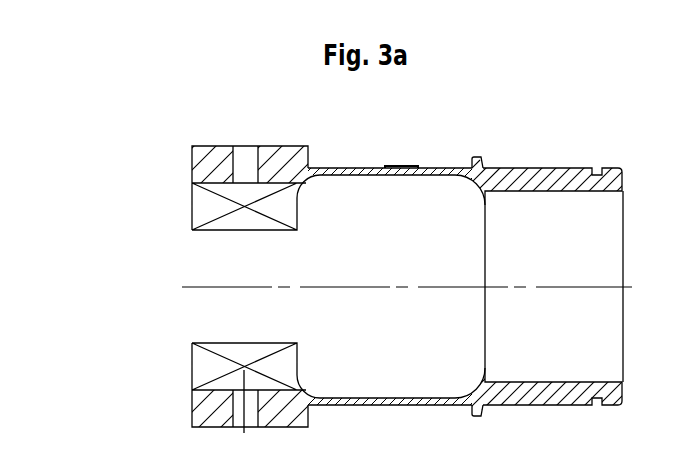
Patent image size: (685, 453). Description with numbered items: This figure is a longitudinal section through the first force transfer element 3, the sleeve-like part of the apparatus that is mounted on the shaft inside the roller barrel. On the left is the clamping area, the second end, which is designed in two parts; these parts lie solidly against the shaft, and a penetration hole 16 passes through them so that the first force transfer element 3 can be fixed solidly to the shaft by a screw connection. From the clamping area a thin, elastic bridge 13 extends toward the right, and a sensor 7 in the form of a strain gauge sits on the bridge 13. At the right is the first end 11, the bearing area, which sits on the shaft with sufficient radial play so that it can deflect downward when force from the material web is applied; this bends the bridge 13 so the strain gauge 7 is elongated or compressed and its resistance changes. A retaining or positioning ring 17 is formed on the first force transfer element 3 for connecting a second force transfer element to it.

The first force transfer element 3 is at (622, 178).
The sensor 7 is at (402, 166).
The first end 11 is at (540, 168).
The bridge 13 is at (358, 168).
The penetration hole 16 is at (253, 203).
The retaining or positioning ring 17 is at (480, 157).